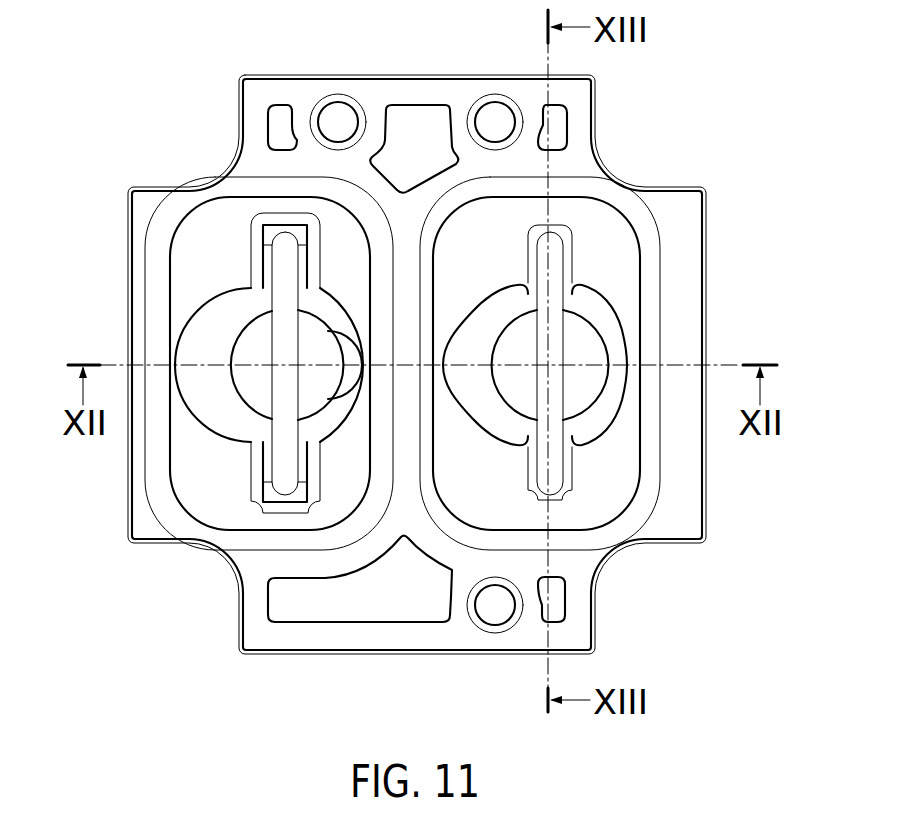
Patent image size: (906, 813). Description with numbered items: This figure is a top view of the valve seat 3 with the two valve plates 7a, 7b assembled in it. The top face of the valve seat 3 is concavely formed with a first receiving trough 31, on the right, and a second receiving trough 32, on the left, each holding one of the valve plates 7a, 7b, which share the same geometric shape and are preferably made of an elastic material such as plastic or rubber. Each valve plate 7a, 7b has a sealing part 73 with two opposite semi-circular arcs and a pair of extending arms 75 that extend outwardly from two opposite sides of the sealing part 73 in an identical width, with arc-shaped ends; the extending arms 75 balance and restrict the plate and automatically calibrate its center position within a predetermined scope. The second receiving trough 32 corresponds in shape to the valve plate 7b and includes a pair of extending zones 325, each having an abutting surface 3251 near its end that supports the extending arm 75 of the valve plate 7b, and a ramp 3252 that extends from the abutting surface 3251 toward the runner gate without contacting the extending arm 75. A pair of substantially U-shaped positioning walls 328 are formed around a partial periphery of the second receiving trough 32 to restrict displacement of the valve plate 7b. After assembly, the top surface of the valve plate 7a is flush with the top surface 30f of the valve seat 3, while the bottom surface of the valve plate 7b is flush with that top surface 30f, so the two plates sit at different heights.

The valve seat 3 is at (228, 67).
The top surface of the valve seat 30f is at (688, 212).
The first receiving trough 31 is at (508, 290).
The second receiving trough 32 is at (336, 290).
The extending zone 325 is at (257, 392).
The abutting surface 3251 is at (267, 233).
The ramp 3252 is at (271, 272).
The positioning wall 328 is at (277, 213).
The sealing part 73 is at (245, 352).
The extending arm 75 is at (283, 258).
The valve plate 7a is at (578, 392).
The valve plate 7b is at (265, 472).